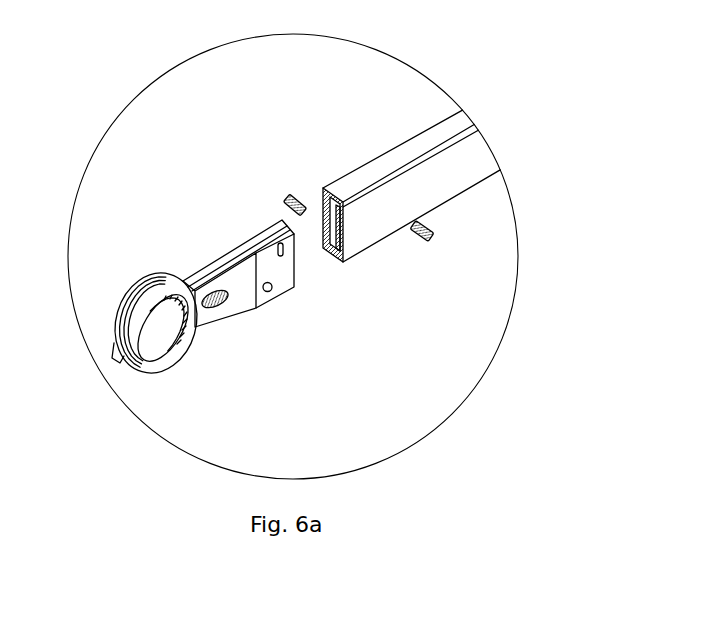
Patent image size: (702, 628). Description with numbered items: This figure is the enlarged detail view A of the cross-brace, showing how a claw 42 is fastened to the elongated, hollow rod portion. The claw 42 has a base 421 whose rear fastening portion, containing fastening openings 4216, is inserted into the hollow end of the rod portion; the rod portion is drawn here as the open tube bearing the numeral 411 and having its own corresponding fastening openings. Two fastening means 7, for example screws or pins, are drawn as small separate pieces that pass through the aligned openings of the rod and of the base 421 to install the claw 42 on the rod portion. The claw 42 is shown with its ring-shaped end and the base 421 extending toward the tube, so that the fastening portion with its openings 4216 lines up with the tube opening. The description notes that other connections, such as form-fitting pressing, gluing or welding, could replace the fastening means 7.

The detail view A is at (140, 93).
The claw 42 is at (182, 237).
The claw base 421 is at (240, 243).
The fastening openings 4216 is at (281, 256).
The tube 411 is at (370, 208).
The fastening means 7 is at (293, 194).